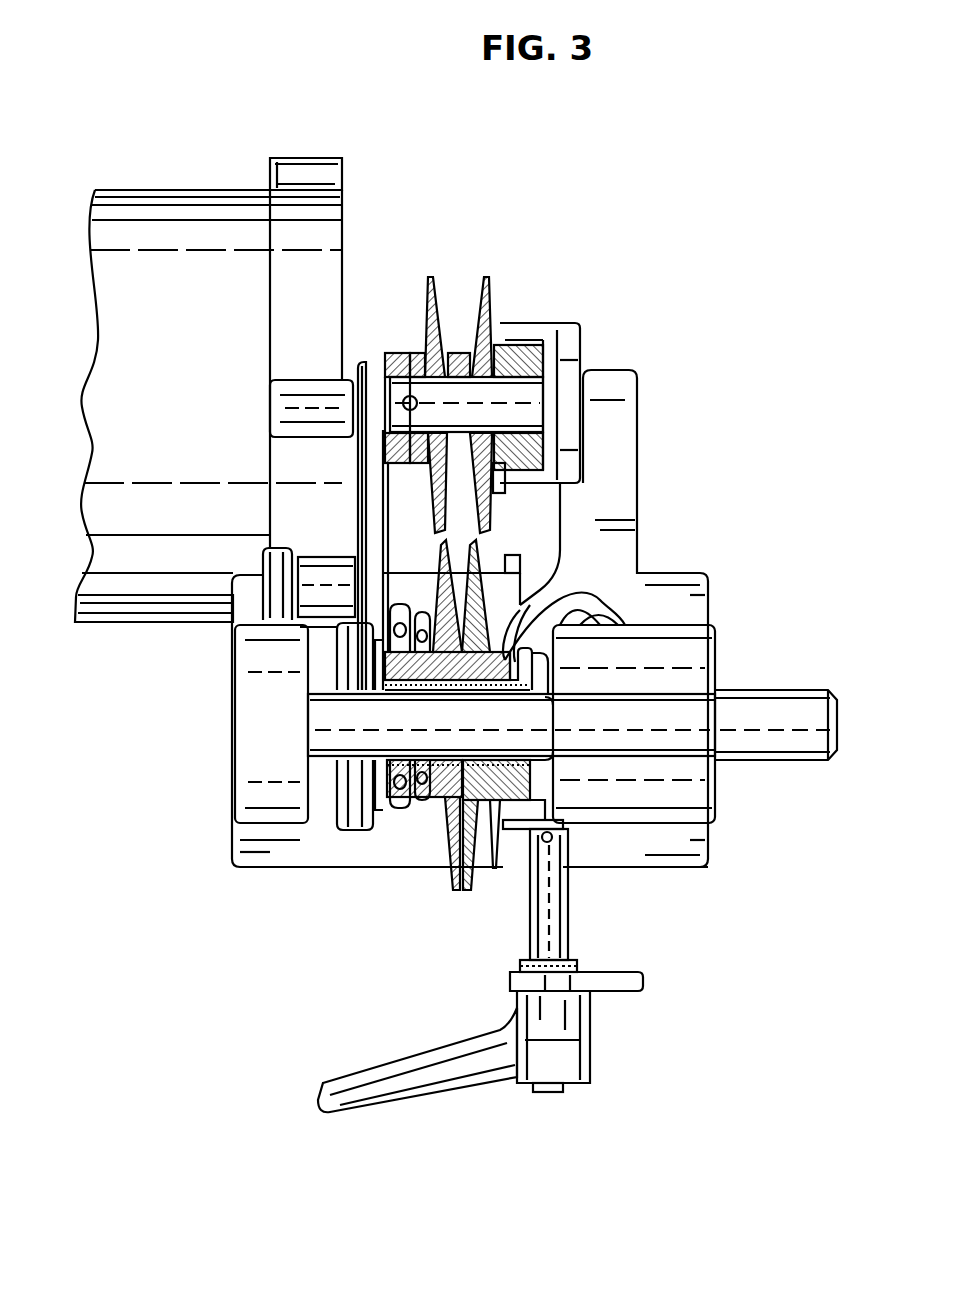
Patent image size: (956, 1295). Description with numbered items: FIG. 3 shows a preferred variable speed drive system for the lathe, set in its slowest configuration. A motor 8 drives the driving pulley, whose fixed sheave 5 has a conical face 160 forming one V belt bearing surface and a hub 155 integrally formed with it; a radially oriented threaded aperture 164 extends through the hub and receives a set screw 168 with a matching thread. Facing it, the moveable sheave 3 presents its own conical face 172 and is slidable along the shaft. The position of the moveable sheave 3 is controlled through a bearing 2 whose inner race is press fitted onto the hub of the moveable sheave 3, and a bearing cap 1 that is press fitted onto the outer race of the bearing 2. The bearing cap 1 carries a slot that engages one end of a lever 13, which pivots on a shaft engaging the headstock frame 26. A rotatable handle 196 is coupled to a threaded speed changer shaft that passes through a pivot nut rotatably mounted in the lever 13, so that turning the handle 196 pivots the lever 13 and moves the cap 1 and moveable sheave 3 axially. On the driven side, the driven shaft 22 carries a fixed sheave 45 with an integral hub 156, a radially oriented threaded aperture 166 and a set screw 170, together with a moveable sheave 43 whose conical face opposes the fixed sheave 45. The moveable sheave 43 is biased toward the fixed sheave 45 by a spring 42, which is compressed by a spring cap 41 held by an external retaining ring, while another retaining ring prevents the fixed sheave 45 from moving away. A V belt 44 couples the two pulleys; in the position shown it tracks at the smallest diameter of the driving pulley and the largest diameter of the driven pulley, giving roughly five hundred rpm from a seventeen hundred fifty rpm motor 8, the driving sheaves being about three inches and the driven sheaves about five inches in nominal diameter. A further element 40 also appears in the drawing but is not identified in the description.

The motor 8 is at (181, 205).
The headstock frame 26 is at (255, 862).
The lever 13 is at (618, 452).
The mounting plate 40 is at (358, 505).
The radially oriented threaded aperture 164 is at (362, 440).
The hub 155 is at (390, 355).
The set screw 168 is at (416, 370).
The fixed sheave 5 is at (428, 280).
The conical face 160 is at (436, 275).
The moveable sheave 3 is at (487, 277).
The conical face 172 is at (492, 300).
The bearing cap 1 is at (543, 330).
The bearing 2 is at (500, 480).
The set screw 170 is at (548, 603).
The radially oriented threaded aperture 166 is at (565, 705).
The hub 156 is at (565, 768).
The driven shaft 22 is at (775, 705).
The spring cap 41 is at (342, 830).
The spring 42 is at (372, 830).
The moveable sheave 43 is at (440, 892).
The V belt 44 is at (452, 885).
The fixed sheave 45 is at (470, 893).
The handle 196 is at (450, 1090).